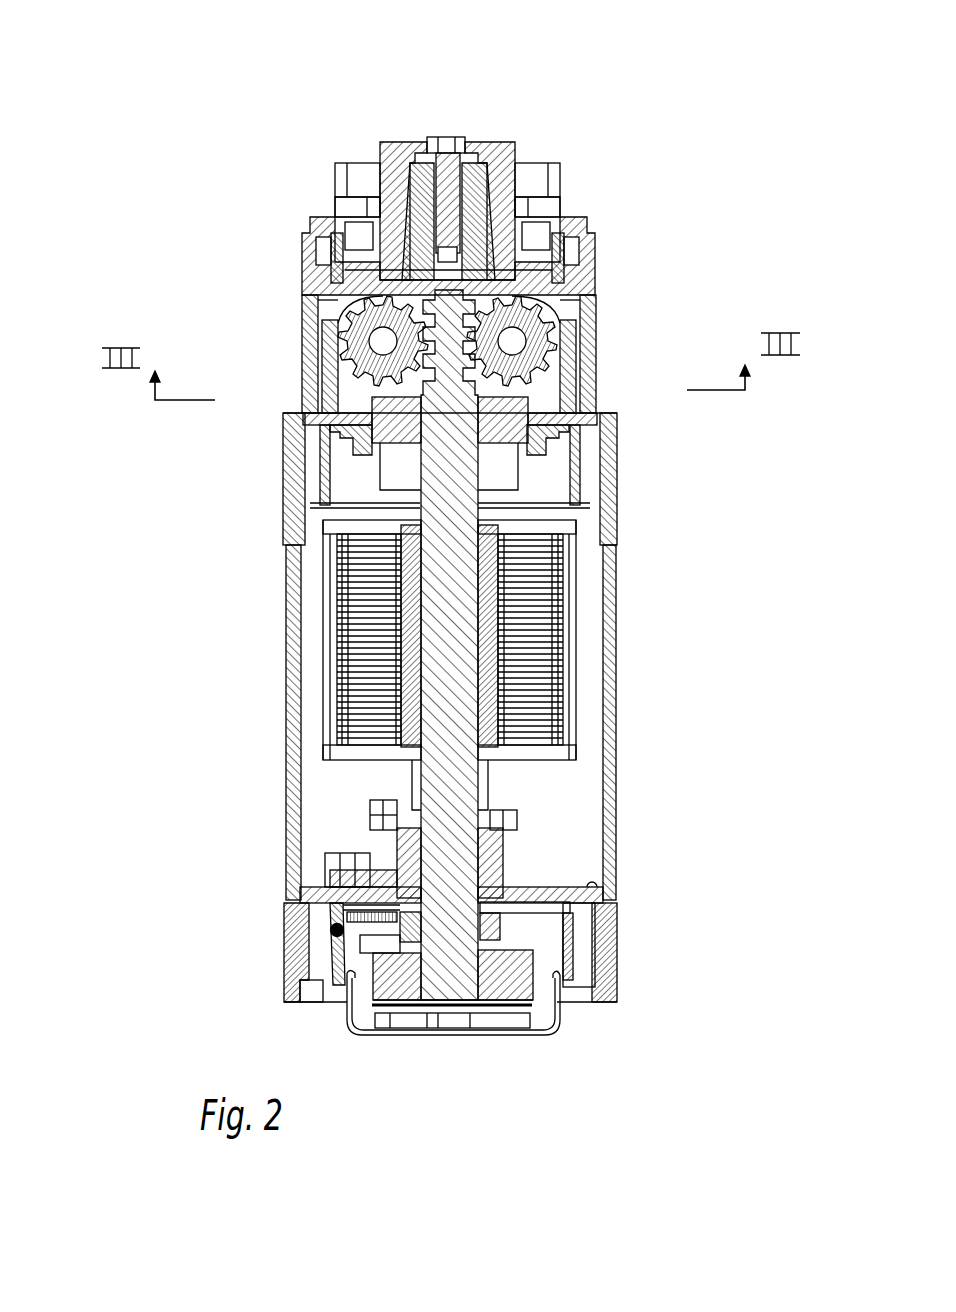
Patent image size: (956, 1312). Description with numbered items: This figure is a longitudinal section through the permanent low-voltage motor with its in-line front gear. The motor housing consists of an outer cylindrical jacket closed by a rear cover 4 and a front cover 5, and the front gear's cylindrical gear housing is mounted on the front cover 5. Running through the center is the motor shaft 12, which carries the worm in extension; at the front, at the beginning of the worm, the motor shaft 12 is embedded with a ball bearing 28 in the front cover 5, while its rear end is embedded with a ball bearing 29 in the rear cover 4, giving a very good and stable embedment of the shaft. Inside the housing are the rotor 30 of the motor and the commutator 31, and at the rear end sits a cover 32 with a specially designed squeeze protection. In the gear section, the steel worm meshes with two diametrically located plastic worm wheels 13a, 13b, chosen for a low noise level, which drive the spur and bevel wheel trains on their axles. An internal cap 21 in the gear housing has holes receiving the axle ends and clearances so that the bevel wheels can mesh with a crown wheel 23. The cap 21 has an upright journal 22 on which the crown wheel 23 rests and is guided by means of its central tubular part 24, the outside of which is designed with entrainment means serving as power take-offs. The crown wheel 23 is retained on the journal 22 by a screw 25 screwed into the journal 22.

The rear cover 4 is at (283, 957).
The front cover 5 is at (284, 493).
The motor shaft 12 is at (460, 773).
The worm wheel 13a is at (558, 332).
The worm wheel 13b is at (302, 313).
The internal cap 21 is at (520, 212).
The upright journal 22 is at (511, 163).
The crown wheel 23 is at (300, 250).
The central tubular part 24 is at (395, 140).
The screw 25 is at (446, 136).
The ball bearing 28 is at (515, 405).
The ball bearing 29 is at (518, 968).
The rotor 30 is at (330, 675).
The commutator 31 is at (393, 850).
The cover 32 is at (527, 1032).